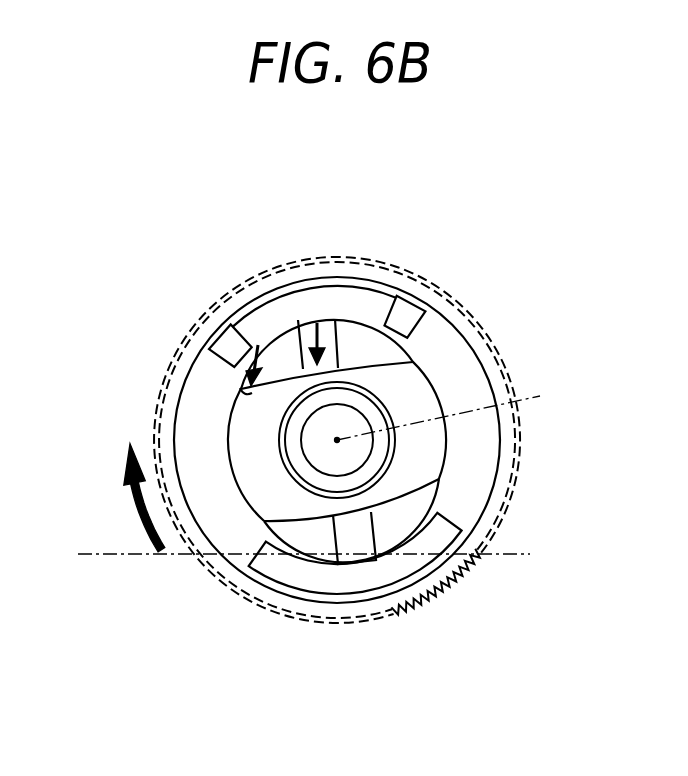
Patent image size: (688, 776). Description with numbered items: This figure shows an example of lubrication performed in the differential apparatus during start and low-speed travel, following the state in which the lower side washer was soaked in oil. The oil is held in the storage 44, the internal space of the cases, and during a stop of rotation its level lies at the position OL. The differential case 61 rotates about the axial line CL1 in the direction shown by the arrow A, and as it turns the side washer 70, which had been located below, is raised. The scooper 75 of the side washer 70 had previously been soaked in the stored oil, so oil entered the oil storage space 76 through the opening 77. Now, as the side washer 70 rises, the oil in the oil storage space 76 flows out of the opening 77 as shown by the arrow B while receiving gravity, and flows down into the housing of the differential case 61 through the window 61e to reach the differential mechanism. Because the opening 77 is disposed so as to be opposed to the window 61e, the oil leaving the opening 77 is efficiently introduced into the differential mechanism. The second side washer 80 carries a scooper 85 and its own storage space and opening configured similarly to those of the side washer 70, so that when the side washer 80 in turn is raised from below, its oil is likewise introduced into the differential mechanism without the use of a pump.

The storage 44 is at (178, 632).
The differential case 61 is at (230, 312).
The window 61e is at (236, 388).
The side washer 70 is at (333, 318).
The scooper 75 is at (247, 322).
The oil storage space 76 is at (368, 302).
The opening 77 is at (353, 273).
The side washer 80 is at (330, 596).
The scooper 85 is at (373, 580).
The arrow A is at (120, 482).
The arrow B is at (306, 320).
The axial line CL1 is at (466, 410).
The oil level position OL is at (112, 553).